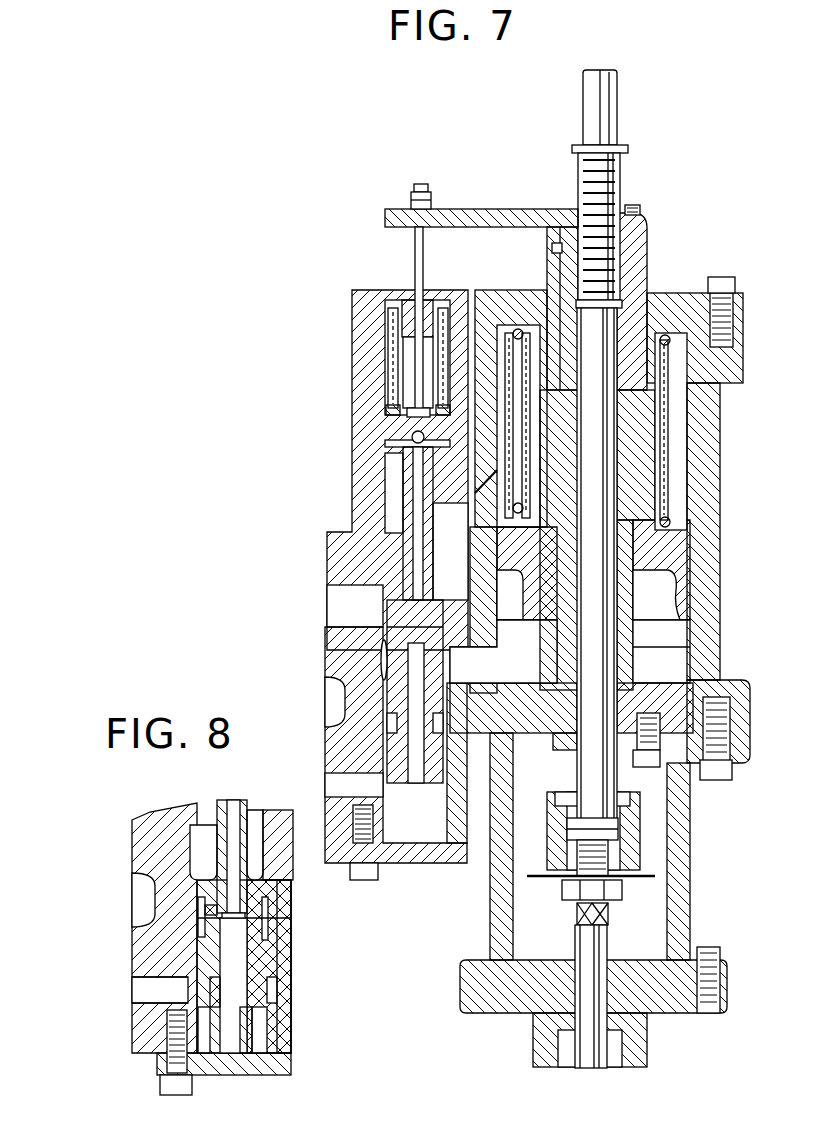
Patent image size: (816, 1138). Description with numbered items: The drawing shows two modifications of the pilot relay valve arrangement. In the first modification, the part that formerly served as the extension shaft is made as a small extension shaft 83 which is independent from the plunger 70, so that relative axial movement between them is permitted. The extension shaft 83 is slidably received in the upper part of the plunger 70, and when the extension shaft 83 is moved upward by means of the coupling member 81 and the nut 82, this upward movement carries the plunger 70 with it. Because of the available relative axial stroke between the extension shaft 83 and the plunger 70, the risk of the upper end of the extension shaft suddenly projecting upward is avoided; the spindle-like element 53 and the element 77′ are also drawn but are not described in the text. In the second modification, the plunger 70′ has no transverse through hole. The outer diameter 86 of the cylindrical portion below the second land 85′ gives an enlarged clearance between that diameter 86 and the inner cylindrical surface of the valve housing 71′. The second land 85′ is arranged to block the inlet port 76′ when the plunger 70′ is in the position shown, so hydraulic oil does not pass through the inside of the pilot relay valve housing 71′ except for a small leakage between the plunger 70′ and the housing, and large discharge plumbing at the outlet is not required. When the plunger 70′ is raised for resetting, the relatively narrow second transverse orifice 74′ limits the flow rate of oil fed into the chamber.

In FIG. 7, the spindle shaft 53 is at (622, 180).
In FIG. 7, the plunger 70 is at (402, 530).
In FIG. 7, the coupling member 81 is at (476, 208).
In FIG. 7, the nut 82 is at (411, 200).
In FIG. 7, the extension shaft 83 is at (414, 253).
In FIG. 8, the plunger 70′ is at (255, 810).
In FIG. 8, the valve housing 71′ is at (130, 822).
In FIG. 8, the second transverse orifice 74′ is at (210, 913).
In FIG. 8, the inlet port 76′ is at (135, 990).
In FIG. 8, the passage 77′ is at (222, 988).
In FIG. 8, the second land 85′ is at (274, 957).
In FIG. 8, the outer diameter 86 is at (253, 1028).